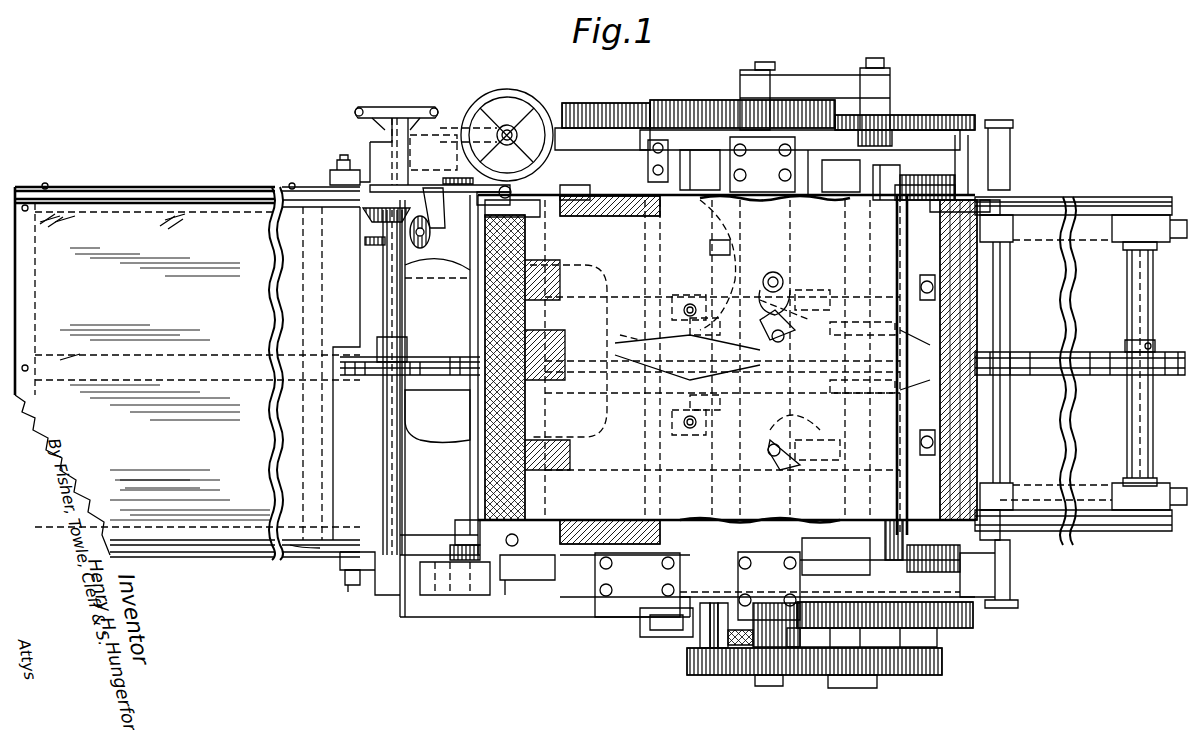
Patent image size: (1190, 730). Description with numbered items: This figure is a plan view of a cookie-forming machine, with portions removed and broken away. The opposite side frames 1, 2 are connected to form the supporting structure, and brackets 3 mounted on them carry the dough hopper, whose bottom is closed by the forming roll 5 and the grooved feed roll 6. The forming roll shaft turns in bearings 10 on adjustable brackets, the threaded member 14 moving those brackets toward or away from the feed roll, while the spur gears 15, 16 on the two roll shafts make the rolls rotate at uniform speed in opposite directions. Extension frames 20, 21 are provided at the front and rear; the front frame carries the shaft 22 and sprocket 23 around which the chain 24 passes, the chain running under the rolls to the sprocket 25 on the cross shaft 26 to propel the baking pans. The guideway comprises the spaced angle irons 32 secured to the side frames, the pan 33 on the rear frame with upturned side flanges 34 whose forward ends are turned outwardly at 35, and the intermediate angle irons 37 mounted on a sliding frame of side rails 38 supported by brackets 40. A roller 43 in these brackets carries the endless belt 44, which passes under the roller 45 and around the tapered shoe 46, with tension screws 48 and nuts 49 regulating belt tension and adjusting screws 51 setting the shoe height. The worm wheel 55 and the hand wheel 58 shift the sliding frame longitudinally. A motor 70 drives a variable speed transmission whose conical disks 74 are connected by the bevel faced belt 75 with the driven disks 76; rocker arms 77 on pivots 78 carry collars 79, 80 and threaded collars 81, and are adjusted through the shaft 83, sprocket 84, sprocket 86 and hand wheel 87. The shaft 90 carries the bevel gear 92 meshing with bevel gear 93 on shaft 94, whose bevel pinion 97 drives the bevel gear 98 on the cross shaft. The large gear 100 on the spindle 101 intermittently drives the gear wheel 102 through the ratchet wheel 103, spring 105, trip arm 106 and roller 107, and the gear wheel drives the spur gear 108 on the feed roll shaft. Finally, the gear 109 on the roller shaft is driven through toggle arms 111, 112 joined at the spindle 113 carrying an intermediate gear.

The side frame 1 is at (470, 612).
The side frame 2 is at (405, 152).
The bracket 3 is at (493, 80).
The forming roll 5 is at (612, 220).
The roll 6 is at (818, 200).
The bearing 10 is at (625, 600).
The threaded member 14 is at (675, 630).
The spur gear 15 is at (591, 103).
The spur gear 16 is at (720, 103).
The extension frame 20 is at (1035, 490).
The extension frame 21 is at (120, 184).
The shaft 22 is at (1145, 280).
The sprocket 23 is at (1150, 348).
The chain 24 is at (432, 352).
The sprocket 25 is at (378, 345).
The cross shaft 26 is at (392, 595).
The angle iron 32 is at (1030, 200).
The pan 33 is at (182, 475).
The side flange 34 is at (214, 202).
The outwardly turned end 35 is at (355, 540).
The angle iron 37 is at (455, 524).
The side rail 38 is at (860, 182).
The bracket 40 is at (940, 178).
The roller 43 is at (915, 558).
The endless belt 44 is at (546, 367).
The roller 45 is at (896, 500).
The tapered shoe 46 is at (530, 210).
The tension screw 48 is at (450, 550).
The nut 49 is at (480, 565).
The adjusting screw 51 is at (548, 180).
The worm wheel 55 is at (448, 150).
The hand wheel 58 is at (478, 108).
The motor 70 is at (458, 412).
The conical disk 74 is at (881, 359).
The bevel faced belt 75 is at (618, 345).
The conical disk 76 is at (700, 405).
The rocker arm 77 is at (798, 285).
The pivot 78 is at (792, 360).
The collar 79 is at (838, 383).
The collar 80 is at (705, 440).
The threaded collar 81 is at (1005, 458).
The shaft 83 is at (392, 478).
The sprocket 84 is at (378, 245).
The sprocket 86 is at (990, 265).
The hand wheel 87 is at (386, 108).
The shaft 90 is at (715, 360).
The bevel gear 92 is at (770, 276).
The bevel gear 93 is at (705, 255).
The shaft 94 is at (440, 232).
The bevel pinion 97 is at (438, 262).
The bevel gear 98 is at (370, 222).
The large gear 100 is at (975, 620).
The spindle 101 is at (865, 583).
The gear wheel 102 is at (942, 668).
The ratchet wheel 103 is at (940, 643).
The spring 105 is at (740, 648).
The trip arm 106 is at (720, 650).
The roller 107 is at (712, 648).
The spur gear 108 is at (735, 650).
The gear 109 is at (968, 115).
The arm 111 is at (821, 88).
The arm 112 is at (890, 175).
The spindle 113 is at (858, 140).